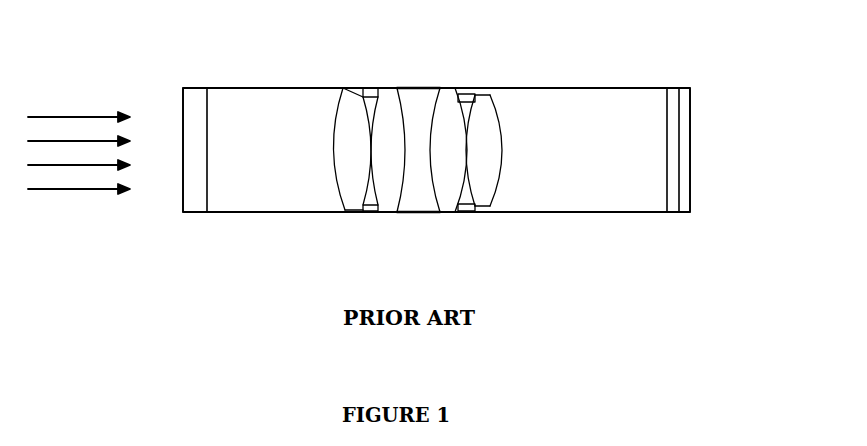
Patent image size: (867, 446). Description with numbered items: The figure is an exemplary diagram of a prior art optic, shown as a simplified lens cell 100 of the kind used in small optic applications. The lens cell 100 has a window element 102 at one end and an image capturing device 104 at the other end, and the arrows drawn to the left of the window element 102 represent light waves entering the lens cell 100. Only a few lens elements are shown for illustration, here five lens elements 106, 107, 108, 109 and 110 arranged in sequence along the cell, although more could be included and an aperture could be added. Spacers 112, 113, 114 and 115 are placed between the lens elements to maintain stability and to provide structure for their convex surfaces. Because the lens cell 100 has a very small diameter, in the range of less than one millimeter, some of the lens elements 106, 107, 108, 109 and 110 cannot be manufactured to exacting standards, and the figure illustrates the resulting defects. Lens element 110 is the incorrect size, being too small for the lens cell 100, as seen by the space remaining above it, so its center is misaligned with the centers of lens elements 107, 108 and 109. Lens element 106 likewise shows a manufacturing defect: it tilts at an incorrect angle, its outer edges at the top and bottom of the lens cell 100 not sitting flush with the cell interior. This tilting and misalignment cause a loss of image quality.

The lens cell 100 is at (610, 212).
The window element 102 is at (194, 208).
The image capturing device 104 is at (690, 213).
The lens element 106 is at (350, 193).
The lens element 107 is at (392, 211).
The lens element 108 is at (416, 96).
The lens element 109 is at (448, 212).
The lens element 110 is at (488, 208).
The spacer 112 is at (363, 88).
The spacer 113 is at (467, 90).
The spacer 114 is at (467, 212).
The spacer 115 is at (371, 210).